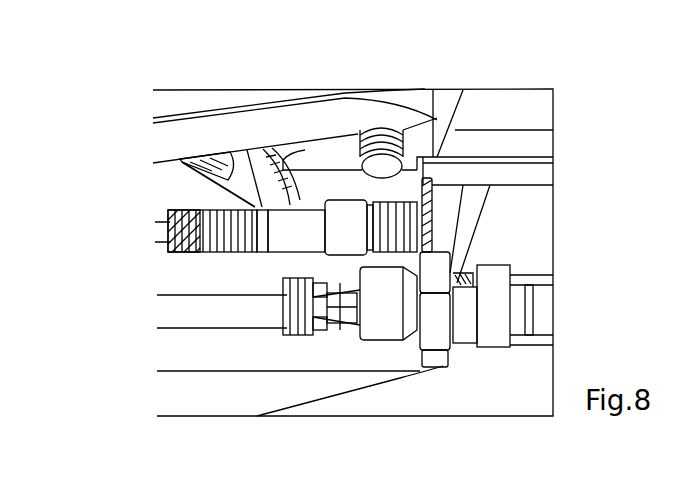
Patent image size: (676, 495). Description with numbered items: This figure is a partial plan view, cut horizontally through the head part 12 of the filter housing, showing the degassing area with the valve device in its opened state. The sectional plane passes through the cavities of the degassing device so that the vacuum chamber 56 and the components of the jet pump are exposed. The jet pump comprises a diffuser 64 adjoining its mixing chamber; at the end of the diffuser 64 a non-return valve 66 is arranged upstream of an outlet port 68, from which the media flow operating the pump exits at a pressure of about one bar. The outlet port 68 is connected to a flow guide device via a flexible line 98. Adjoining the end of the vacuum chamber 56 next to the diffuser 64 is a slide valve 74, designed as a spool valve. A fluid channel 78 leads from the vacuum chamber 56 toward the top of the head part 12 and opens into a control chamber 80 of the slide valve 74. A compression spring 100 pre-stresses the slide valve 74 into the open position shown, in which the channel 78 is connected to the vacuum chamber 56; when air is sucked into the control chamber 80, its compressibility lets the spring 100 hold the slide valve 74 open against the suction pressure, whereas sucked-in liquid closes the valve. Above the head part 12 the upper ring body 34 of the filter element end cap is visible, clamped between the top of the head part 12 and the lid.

The head part 12 is at (407, 350).
The upper ring body 34 is at (402, 105).
The vacuum chamber 56 is at (155, 232).
The diffuser 64 is at (227, 327).
The non-return valve 66 is at (332, 334).
The outlet port 68 is at (457, 315).
The slide valve 74 is at (258, 236).
The fluid channel 78 is at (268, 170).
The control chamber 80 is at (300, 235).
The flexible line 98 is at (537, 283).
The compression spring 100 is at (170, 252).